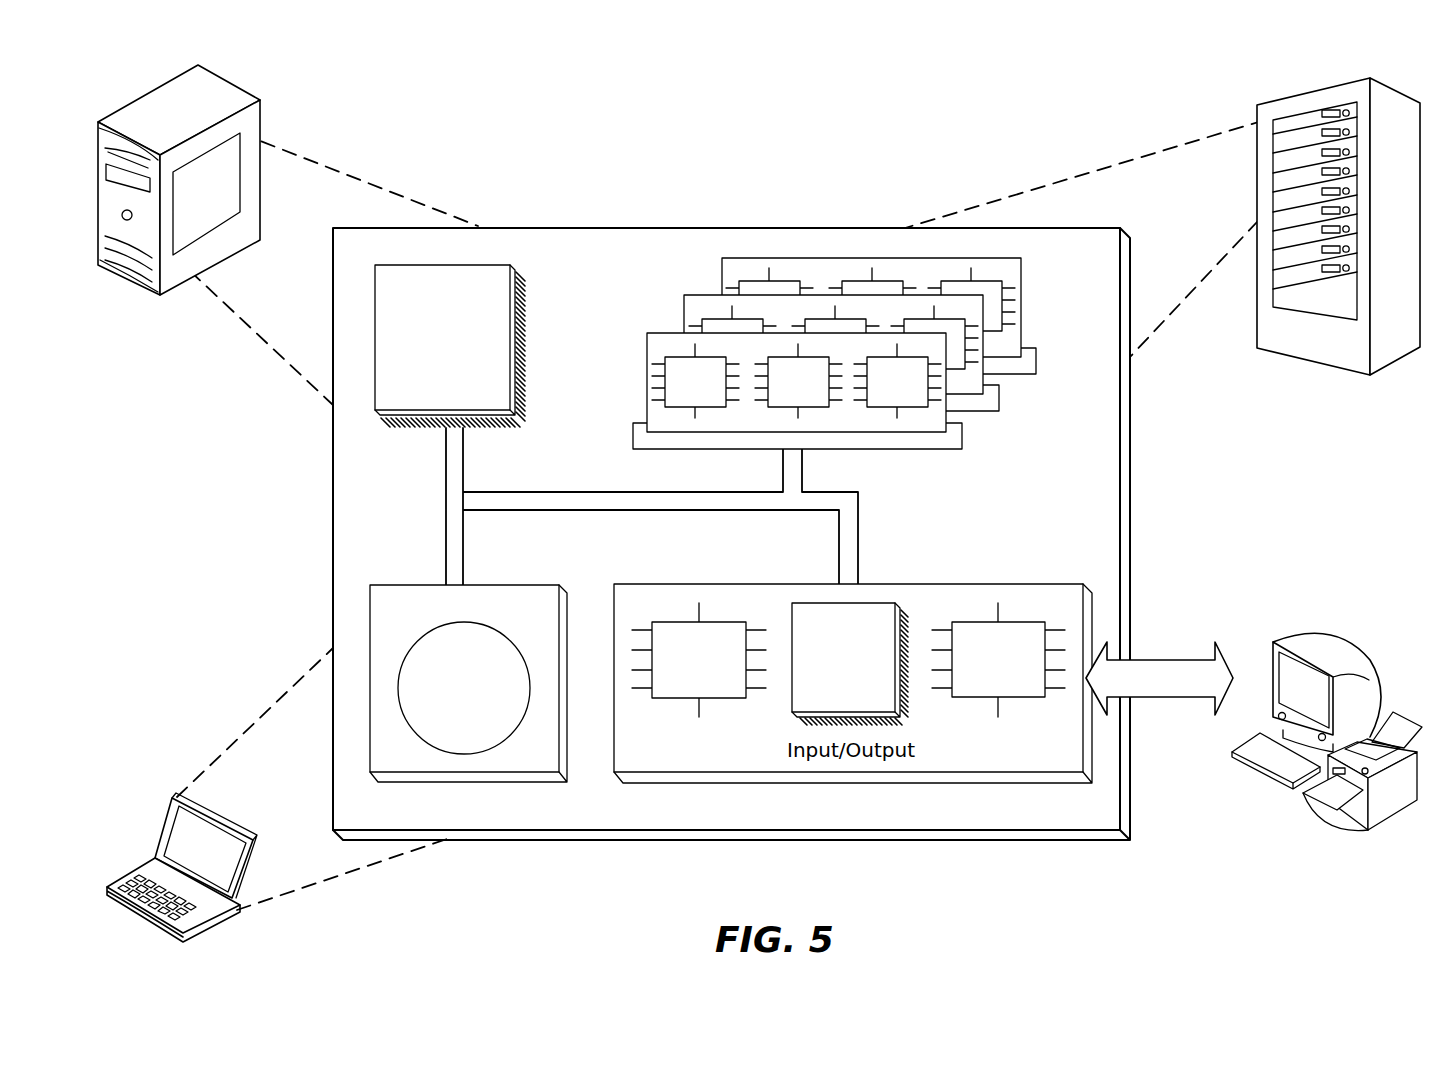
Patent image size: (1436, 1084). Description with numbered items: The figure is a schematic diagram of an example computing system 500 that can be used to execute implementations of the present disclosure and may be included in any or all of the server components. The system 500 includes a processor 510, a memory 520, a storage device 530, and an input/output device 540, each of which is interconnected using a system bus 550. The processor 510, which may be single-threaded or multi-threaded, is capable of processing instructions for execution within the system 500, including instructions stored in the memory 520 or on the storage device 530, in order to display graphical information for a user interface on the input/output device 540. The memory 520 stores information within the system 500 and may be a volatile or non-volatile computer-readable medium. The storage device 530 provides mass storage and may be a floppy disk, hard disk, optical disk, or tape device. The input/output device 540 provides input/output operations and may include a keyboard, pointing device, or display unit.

The computing system 500 is at (538, 98).
The processor 510 is at (500, 401).
The memory 520 is at (1027, 408).
The storage device 530 is at (549, 765).
The input/output device 540 is at (1264, 650).
The system bus 550 is at (650, 511).